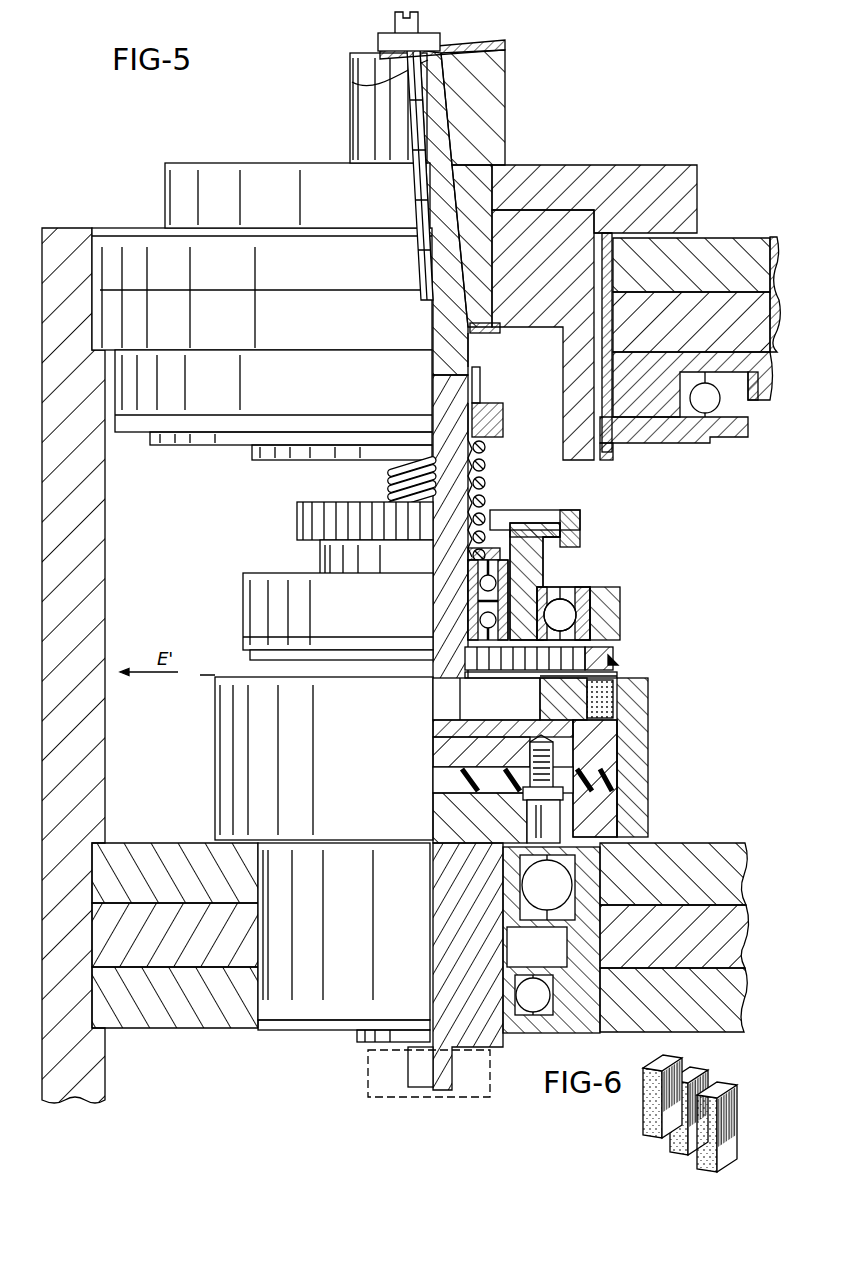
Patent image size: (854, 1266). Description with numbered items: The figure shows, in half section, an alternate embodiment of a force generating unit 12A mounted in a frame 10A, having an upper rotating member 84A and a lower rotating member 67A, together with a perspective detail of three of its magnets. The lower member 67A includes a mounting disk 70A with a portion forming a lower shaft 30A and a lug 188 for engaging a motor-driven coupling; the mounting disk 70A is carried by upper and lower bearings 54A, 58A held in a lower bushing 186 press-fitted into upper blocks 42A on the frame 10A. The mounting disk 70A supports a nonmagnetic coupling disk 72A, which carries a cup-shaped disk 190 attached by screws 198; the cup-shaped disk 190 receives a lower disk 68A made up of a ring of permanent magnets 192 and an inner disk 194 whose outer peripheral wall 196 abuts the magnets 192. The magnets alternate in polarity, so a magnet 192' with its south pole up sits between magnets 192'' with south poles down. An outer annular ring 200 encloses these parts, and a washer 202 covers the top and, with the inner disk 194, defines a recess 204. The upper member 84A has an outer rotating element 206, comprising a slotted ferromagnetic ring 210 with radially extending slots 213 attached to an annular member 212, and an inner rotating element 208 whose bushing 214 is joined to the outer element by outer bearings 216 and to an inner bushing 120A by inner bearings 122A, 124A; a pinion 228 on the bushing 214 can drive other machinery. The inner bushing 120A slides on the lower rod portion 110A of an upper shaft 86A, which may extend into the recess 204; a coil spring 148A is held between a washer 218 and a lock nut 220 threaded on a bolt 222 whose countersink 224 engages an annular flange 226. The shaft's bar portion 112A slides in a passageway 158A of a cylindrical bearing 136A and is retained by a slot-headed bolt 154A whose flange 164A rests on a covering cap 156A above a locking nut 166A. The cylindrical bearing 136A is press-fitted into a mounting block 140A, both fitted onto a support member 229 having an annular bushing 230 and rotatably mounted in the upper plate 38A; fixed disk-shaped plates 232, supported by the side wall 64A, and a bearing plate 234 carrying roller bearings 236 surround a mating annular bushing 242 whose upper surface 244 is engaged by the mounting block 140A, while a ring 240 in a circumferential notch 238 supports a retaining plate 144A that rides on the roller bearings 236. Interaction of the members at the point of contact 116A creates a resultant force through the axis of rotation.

In FIG. 5, the frame 10A is at (116, 799).
In FIG. 5, the side wall 64A is at (97, 487).
In FIG. 5, the flange 164A is at (352, 60).
In FIG. 5, the locking nut 166A is at (352, 82).
In FIG. 5, the covering cap 156A is at (497, 33).
In FIG. 5, the slot-headed bolt 154A is at (427, 16).
In FIG. 5, the passageway 158A is at (438, 83).
In FIG. 5, the cylindrical bearing 136A is at (498, 110).
In FIG. 5, the bar portion 112A is at (440, 147).
In FIG. 5, the mounting block 140A is at (628, 172).
In FIG. 5, the support member 229 is at (574, 261).
In FIG. 5, the annular bushing 230 is at (601, 297).
In FIG. 5, the upper surface 244 is at (618, 230).
In FIG. 5, the upper plate 38A is at (709, 228).
In FIG. 5, the disk-shaped plates 232 is at (730, 293).
In FIG. 5, the mating annular bushing 242 is at (613, 323).
In FIG. 5, the roller bearings 236 is at (670, 425).
In FIG. 5, the retaining plate 144A is at (743, 410).
In FIG. 5, the bearing plate 234 is at (750, 405).
In FIG. 5, the ring 240 is at (637, 440).
In FIG. 5, the circumferential notch 238 is at (610, 460).
In FIG. 5, the upper shaft 86A is at (480, 357).
In FIG. 5, the bolt 222 is at (480, 378).
In FIG. 5, the lock nut 220 is at (493, 405).
In FIG. 5, the countersink 224 is at (468, 378).
In FIG. 5, the annular flange 226 is at (463, 400).
In FIG. 5, the lower rod portion 110A is at (470, 487).
In FIG. 5, the washer 218 is at (492, 533).
In FIG. 5, the inner rotating element 208 is at (543, 500).
In FIG. 5, the coil spring 148A is at (385, 475).
In FIG. 5, the pinion 228 is at (293, 520).
In FIG. 5, the inner bushing 120A is at (467, 572).
In FIG. 5, the inner bearing 122A is at (462, 583).
In FIG. 5, the inner bearing 124A is at (463, 610).
In FIG. 5, the force generating unit 12A is at (670, 568).
In FIG. 5, the bushing 214 is at (537, 557).
In FIG. 5, the outer rotating element 206 is at (620, 573).
In FIG. 5, the upper rotating member 84A is at (678, 601).
In FIG. 5, the outer bearings 216 is at (620, 594).
In FIG. 5, the annular member 212 is at (613, 622).
In FIG. 5, the radially extending slots 213 is at (467, 660).
In FIG. 5, the inner disk 194 is at (460, 722).
In FIG. 5, the recess 204 is at (503, 707).
In FIG. 5, the lower rotating member 67A is at (722, 739).
In FIG. 5, the ring 210 is at (597, 670).
In FIG. 5, the point of contact 116A is at (613, 667).
In FIG. 5, the lower disk 68A is at (625, 691).
In FIG. 5, the permanent magnets 192 is at (657, 702).
In FIG. 5, the washer 202 is at (640, 680).
In FIG. 5, the outer annular ring 200 is at (640, 800).
In FIG. 5, the cup-shaped disk 190 is at (610, 753).
In FIG. 5, the outer peripheral wall 196 is at (605, 733).
In FIG. 5, the coupling disk 72A is at (617, 772).
In FIG. 5, the mounting disk 70A is at (613, 823).
In FIG. 5, the screws 198 is at (533, 748).
In FIG. 5, the lower shaft 30A is at (486, 941).
In FIG. 5, the lug 188 is at (443, 1062).
In FIG. 5, the upper bearing 54A is at (580, 863).
In FIG. 5, the lower bushing 186 is at (580, 937).
In FIG. 5, the lower bearing 58A is at (563, 1002).
In FIG. 5, the upper blocks 42A is at (762, 987).
In FIG. 6, the magnet 192' is at (715, 1114).
In FIG. 6, the magnets 192'' is at (688, 1133).